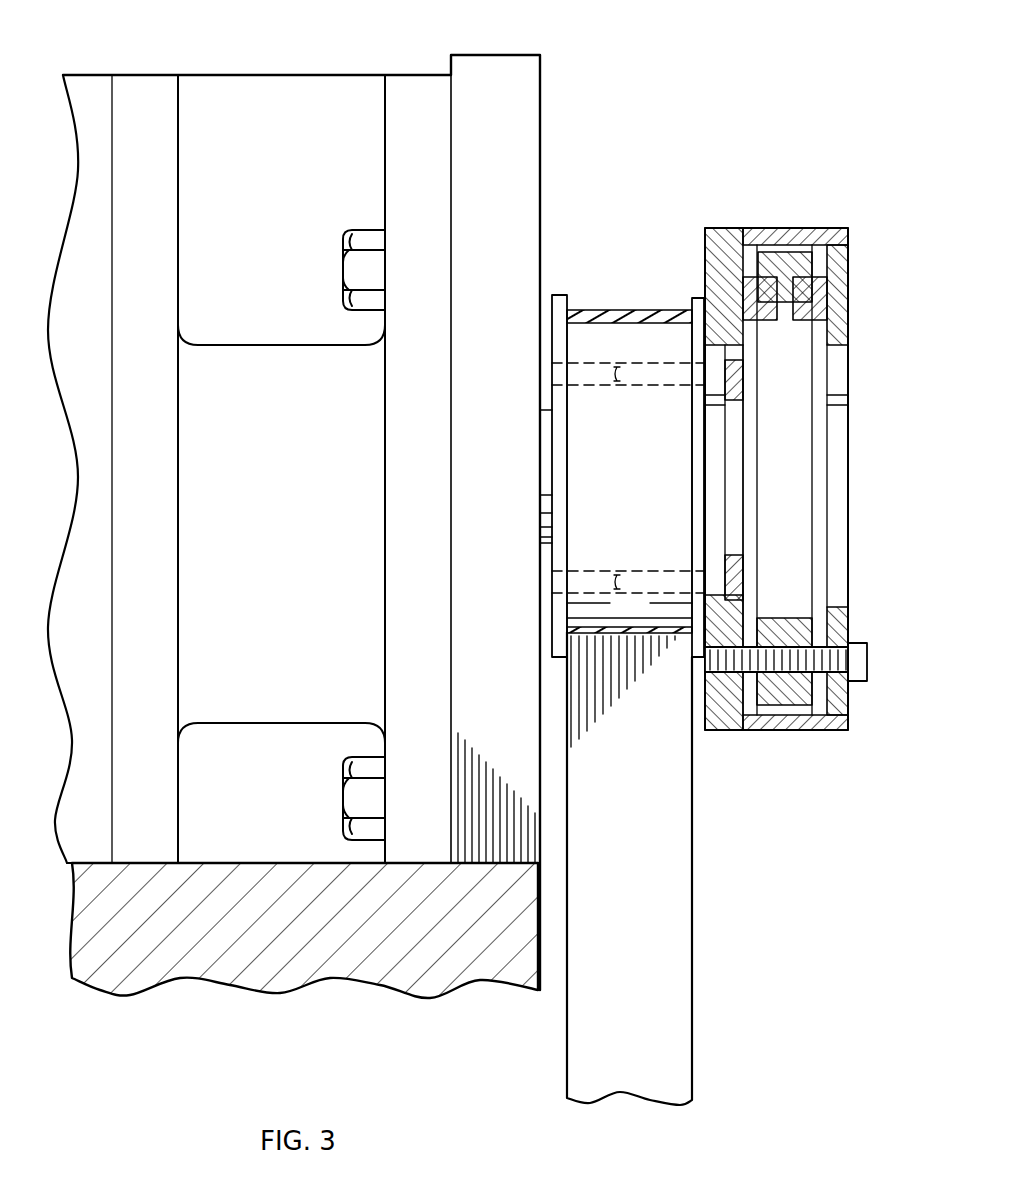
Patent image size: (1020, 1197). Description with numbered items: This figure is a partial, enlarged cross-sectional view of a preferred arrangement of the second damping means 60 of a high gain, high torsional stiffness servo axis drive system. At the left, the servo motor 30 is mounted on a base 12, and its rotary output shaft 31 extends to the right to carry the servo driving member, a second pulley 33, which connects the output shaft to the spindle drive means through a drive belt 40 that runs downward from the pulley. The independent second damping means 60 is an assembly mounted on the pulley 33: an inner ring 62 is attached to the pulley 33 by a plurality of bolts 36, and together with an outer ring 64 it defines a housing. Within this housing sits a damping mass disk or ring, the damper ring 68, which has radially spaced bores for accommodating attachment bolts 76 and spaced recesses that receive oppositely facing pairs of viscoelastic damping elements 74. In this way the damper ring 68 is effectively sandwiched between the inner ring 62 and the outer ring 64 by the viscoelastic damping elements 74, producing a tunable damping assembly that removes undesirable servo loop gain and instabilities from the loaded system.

The servo motor 30 is at (287, 80).
The base 12 is at (430, 985).
The rotary output shaft 31 is at (540, 458).
The pulley 33 is at (560, 338).
The drive belt 40 is at (680, 950).
The second damping means 60 is at (862, 738).
The inner ring 62 is at (706, 248).
The outer ring 64 is at (840, 230).
The damper ring 68 is at (786, 258).
The viscoelastic damping elements 74 is at (745, 296).
The bolts 36 is at (745, 396).
The attachment bolts 76 is at (862, 646).